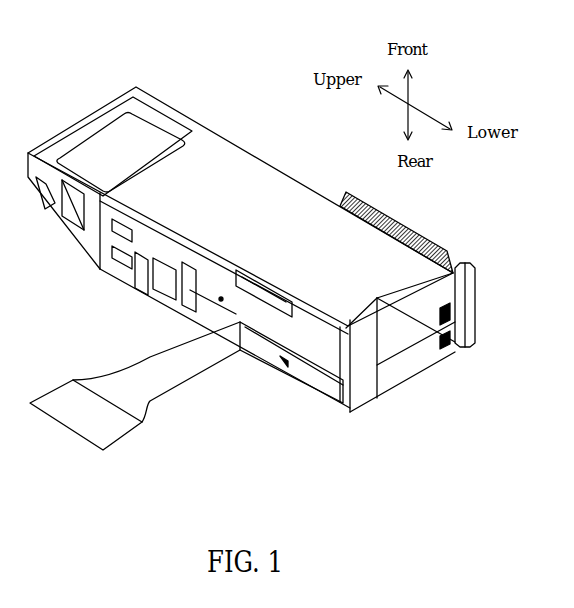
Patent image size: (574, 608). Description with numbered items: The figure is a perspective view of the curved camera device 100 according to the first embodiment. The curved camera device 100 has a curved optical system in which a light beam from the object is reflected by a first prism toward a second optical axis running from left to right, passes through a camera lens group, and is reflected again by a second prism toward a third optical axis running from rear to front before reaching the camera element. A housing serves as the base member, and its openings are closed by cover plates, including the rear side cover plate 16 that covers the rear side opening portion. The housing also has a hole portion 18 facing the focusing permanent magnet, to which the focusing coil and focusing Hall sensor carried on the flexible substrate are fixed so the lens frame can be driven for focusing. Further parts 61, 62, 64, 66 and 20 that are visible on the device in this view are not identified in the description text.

The curved camera device 100 is at (117, 174).
The opening 61 is at (122, 146).
The upper housing 62 is at (195, 223).
The recess 64 is at (380, 268).
The end portion 66 is at (417, 233).
The rear side cover plate 16 is at (408, 360).
The hole portion 18 is at (407, 282).
The pull tab 20 is at (170, 372).